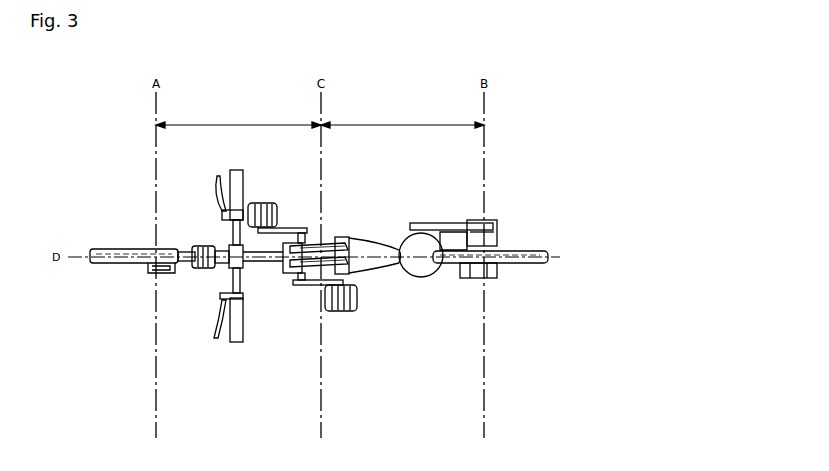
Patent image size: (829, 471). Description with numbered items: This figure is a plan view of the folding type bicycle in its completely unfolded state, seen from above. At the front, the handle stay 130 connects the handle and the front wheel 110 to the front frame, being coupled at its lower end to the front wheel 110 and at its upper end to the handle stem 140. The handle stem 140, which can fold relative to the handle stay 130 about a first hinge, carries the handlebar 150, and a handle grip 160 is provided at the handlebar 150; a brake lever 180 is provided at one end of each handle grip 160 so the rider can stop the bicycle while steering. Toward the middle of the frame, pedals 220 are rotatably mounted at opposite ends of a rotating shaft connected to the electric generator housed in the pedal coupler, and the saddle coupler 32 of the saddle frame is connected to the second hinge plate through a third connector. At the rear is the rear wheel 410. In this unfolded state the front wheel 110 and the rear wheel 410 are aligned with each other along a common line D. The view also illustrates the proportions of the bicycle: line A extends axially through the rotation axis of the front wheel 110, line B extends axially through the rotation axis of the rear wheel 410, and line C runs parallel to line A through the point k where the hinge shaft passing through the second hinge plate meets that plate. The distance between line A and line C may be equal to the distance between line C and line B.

The front wheel 110 is at (126, 267).
The handle stay 130 is at (165, 274).
The handle stem 140 is at (215, 249).
The handlebar 150 is at (222, 302).
The handle grip 160 is at (236, 170).
The brake lever 180 is at (216, 195).
The point K k is at (325, 242).
The pedal 220 is at (347, 312).
The saddle coupler 32 is at (420, 277).
The rear wheel 410 is at (520, 264).